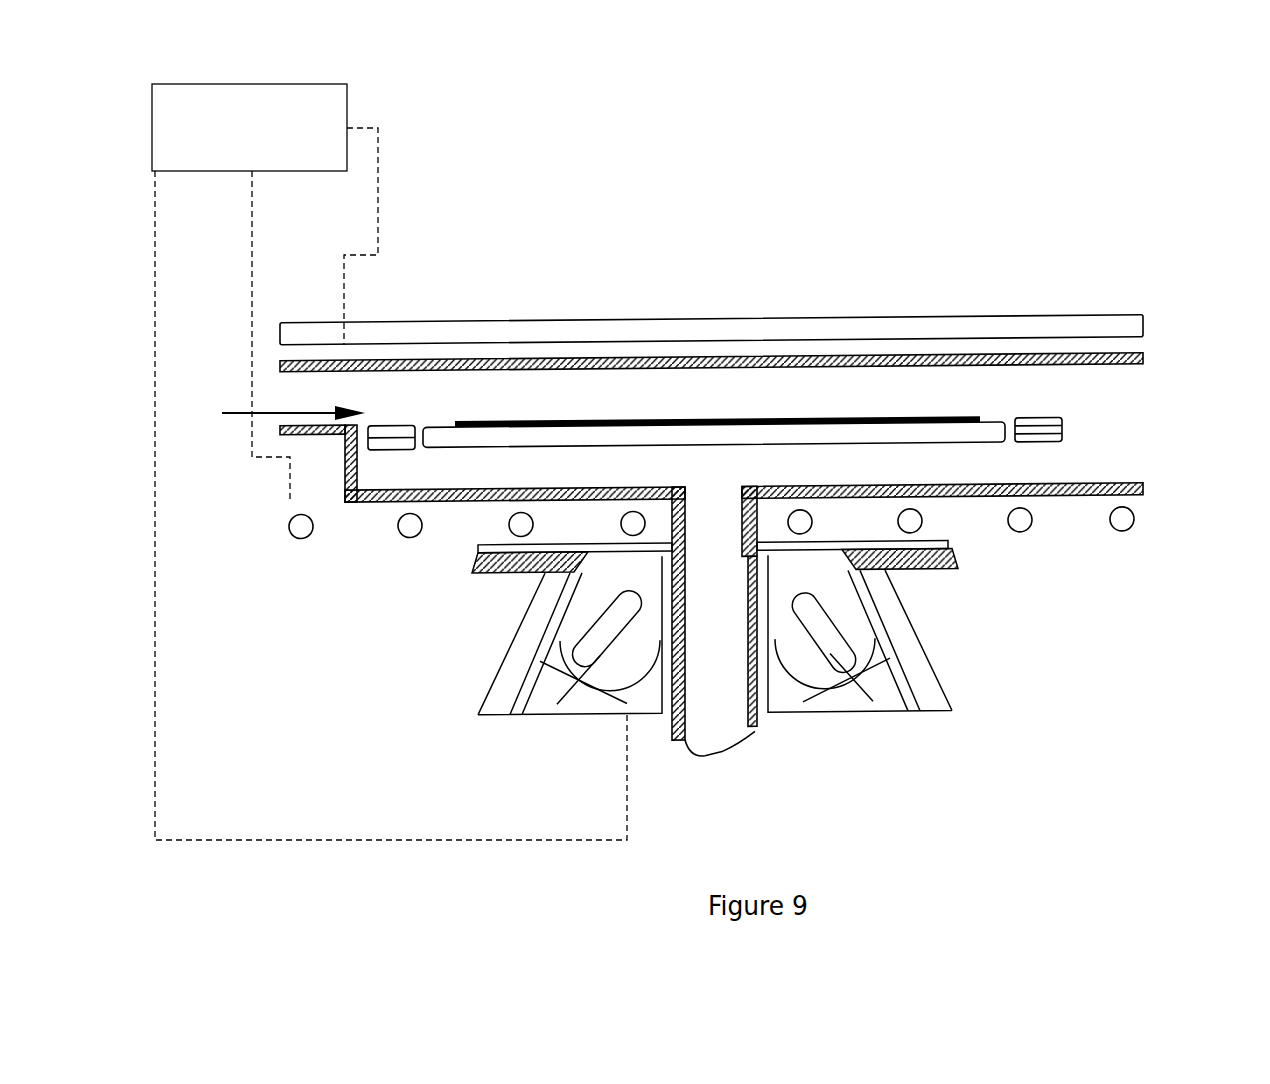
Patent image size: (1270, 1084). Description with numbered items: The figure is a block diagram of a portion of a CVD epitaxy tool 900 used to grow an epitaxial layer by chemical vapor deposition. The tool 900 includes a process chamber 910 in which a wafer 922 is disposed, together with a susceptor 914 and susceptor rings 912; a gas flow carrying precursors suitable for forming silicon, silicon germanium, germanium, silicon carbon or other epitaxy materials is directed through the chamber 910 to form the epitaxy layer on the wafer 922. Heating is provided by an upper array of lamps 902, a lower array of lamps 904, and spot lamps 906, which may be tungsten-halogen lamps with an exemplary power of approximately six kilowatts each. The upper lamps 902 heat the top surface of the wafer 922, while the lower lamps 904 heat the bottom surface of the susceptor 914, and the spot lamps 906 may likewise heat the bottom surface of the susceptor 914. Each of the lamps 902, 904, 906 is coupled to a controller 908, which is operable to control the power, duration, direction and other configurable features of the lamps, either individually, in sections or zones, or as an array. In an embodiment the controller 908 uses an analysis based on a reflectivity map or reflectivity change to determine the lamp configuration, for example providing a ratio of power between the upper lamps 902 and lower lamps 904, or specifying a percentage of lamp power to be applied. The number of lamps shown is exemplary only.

The CVD epitaxy tool 900 is at (1027, 168).
The upper array of lamps 902 is at (537, 320).
The lower array of lamps 904 is at (407, 543).
The spot lamps 906 is at (583, 683).
The controller 908 is at (389, 462).
The process chamber 910 is at (698, 357).
The susceptor rings 912 is at (1042, 447).
The susceptor 914 is at (998, 415).
The wafer 922 is at (913, 410).